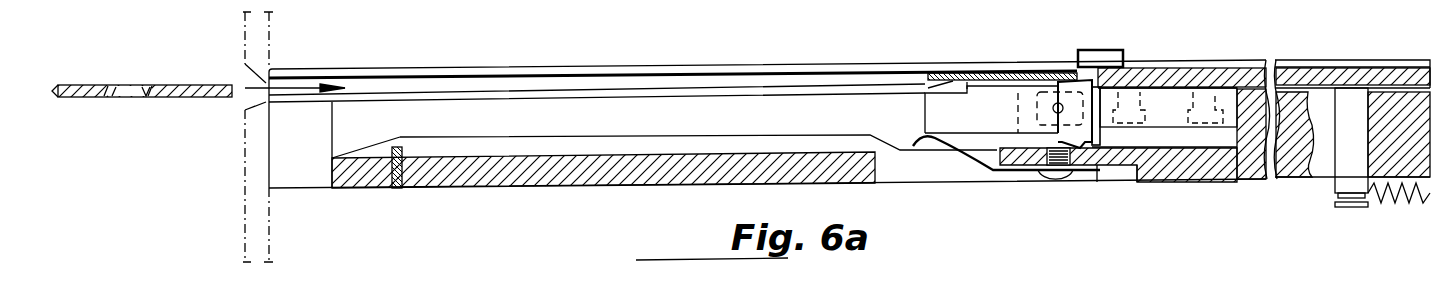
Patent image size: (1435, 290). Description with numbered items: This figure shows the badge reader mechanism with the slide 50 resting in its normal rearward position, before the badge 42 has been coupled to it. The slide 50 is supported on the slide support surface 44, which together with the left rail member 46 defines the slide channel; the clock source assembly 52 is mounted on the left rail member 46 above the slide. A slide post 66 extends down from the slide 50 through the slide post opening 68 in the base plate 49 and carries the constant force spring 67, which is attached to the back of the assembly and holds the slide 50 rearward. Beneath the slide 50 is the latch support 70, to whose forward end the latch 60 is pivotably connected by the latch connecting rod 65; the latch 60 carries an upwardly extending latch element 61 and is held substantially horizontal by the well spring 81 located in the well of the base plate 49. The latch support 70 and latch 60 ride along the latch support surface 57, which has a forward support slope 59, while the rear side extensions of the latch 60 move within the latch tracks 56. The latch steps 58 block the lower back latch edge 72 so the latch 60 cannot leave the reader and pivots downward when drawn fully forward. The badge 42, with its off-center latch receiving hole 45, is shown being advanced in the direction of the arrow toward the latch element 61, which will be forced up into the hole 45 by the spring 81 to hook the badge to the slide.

The badge 42 is at (195, 88).
The slide support surface 44 is at (1322, 88).
The latch receiving hole 45 is at (121, 86).
The left rail member 46 is at (652, 72).
The base plate 49 is at (608, 172).
The slide 50 is at (1236, 80).
The clock source assembly 52 is at (1102, 54).
The latch tracks 56 is at (605, 156).
The latch support surface 57 is at (515, 136).
The latch steps 58 is at (402, 148).
The forward support slope 59 is at (365, 148).
The latch 60 is at (994, 108).
The latch element 61 is at (957, 80).
The latch connecting rod 65 is at (1055, 105).
The slide post 66 is at (1348, 178).
The constant force spring 67 is at (1425, 205).
The slide post opening 68 is at (1283, 180).
The latch support 70 is at (1168, 115).
The latch edge 72 is at (1076, 145).
The well spring 81 is at (975, 162).